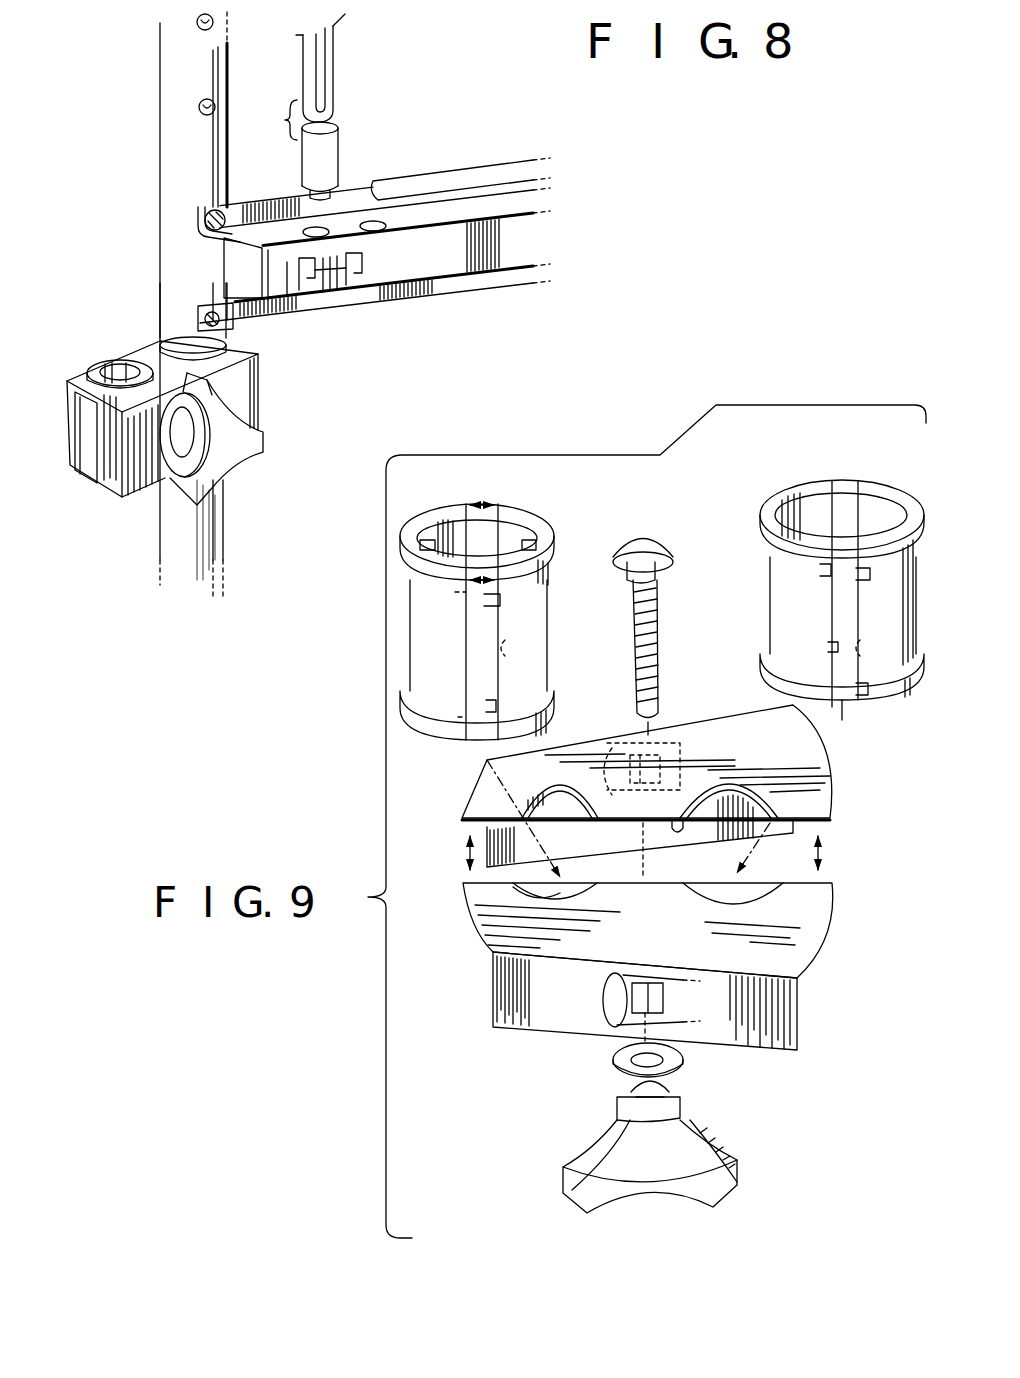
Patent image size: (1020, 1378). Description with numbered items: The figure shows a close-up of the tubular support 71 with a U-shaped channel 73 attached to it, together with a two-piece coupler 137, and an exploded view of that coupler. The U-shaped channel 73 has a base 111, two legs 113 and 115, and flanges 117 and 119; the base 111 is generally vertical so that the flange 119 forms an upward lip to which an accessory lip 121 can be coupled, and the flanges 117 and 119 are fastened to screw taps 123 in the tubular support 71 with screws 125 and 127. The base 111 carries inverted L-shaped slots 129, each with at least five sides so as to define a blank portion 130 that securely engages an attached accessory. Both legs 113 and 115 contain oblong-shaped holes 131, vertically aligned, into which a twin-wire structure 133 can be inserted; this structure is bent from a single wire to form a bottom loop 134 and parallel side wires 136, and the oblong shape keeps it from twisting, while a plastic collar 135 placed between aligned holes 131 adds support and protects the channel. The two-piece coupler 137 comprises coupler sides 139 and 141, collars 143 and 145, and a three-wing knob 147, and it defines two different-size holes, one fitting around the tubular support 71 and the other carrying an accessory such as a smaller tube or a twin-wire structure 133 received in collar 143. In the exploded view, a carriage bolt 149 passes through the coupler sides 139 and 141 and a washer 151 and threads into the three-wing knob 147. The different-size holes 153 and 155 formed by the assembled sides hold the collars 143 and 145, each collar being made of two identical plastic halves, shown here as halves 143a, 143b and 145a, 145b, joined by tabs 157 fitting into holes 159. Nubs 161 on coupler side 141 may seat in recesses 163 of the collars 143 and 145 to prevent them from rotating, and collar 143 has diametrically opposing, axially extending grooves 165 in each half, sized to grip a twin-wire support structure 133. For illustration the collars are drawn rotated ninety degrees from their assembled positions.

In FIG. 8, the tubular support 71 is at (168, 137).
In FIG. 8, the U-shaped channel 73 is at (405, 310).
In FIG. 8, the base 111 is at (462, 268).
In FIG. 8, the leg 113 is at (227, 292).
In FIG. 8, the leg 115 is at (224, 243).
In FIG. 8, the flange 117 is at (205, 312).
In FIG. 8, the flange 119 is at (198, 220).
In FIG. 8, the accessory lip 121 is at (472, 168).
In FIG. 8, the screw taps 123 is at (203, 100).
In FIG. 8, the screw 125 is at (237, 327).
In FIG. 8, the screw 127 is at (227, 207).
In FIG. 8, the inverted L-shaped slot 129 is at (348, 288).
In FIG. 8, the blank portion 130 is at (360, 268).
In FIG. 8, the oblong-shaped hole 131 is at (375, 234).
In FIG. 8, the twin-wire structure 133 is at (336, 36).
In FIG. 8, the bottom loop 134 is at (323, 131).
In FIG. 8, the plastic collar 135 is at (337, 153).
In FIG. 8, the parallel side wires 136 is at (334, 62).
In FIG. 8, the two-piece coupler 137 is at (130, 498).
In FIG. 9, the two-piece coupler 137 is at (458, 840).
In FIG. 8, the coupler side 139 is at (150, 346).
In FIG. 9, the coupler side 139 is at (490, 762).
In FIG. 8, the coupler side 141 is at (258, 412).
In FIG. 9, the coupler side 141 is at (503, 980).
In FIG. 8, the collar 143 is at (128, 356).
In FIG. 9, the collar 143 is at (486, 492).
In FIG. 9, the first sleeve half 143a is at (456, 520).
In FIG. 9, the first sleeve half 143b is at (525, 528).
In FIG. 8, the collar 145 is at (258, 370).
In FIG. 9, the collar 145 is at (841, 478).
In FIG. 9, the second sleeve half 145a is at (788, 498).
In FIG. 9, the second sleeve half 145b is at (897, 494).
In FIG. 8, the three-wing knob 147 is at (228, 458).
In FIG. 9, the three-wing knob 147 is at (643, 1190).
In FIG. 9, the carriage bolt 149 is at (654, 537).
In FIG. 9, the washer 151 is at (683, 1066).
In FIG. 9, the hole 153 is at (567, 870).
In FIG. 9, the hole 155 is at (713, 833).
In FIG. 9, the tab 157 is at (853, 688).
In FIG. 9, the hole 159 is at (828, 575).
In FIG. 9, the nub 161 is at (608, 900).
In FIG. 9, the recess 163 is at (858, 648).
In FIG. 9, the groove 165 is at (433, 533).